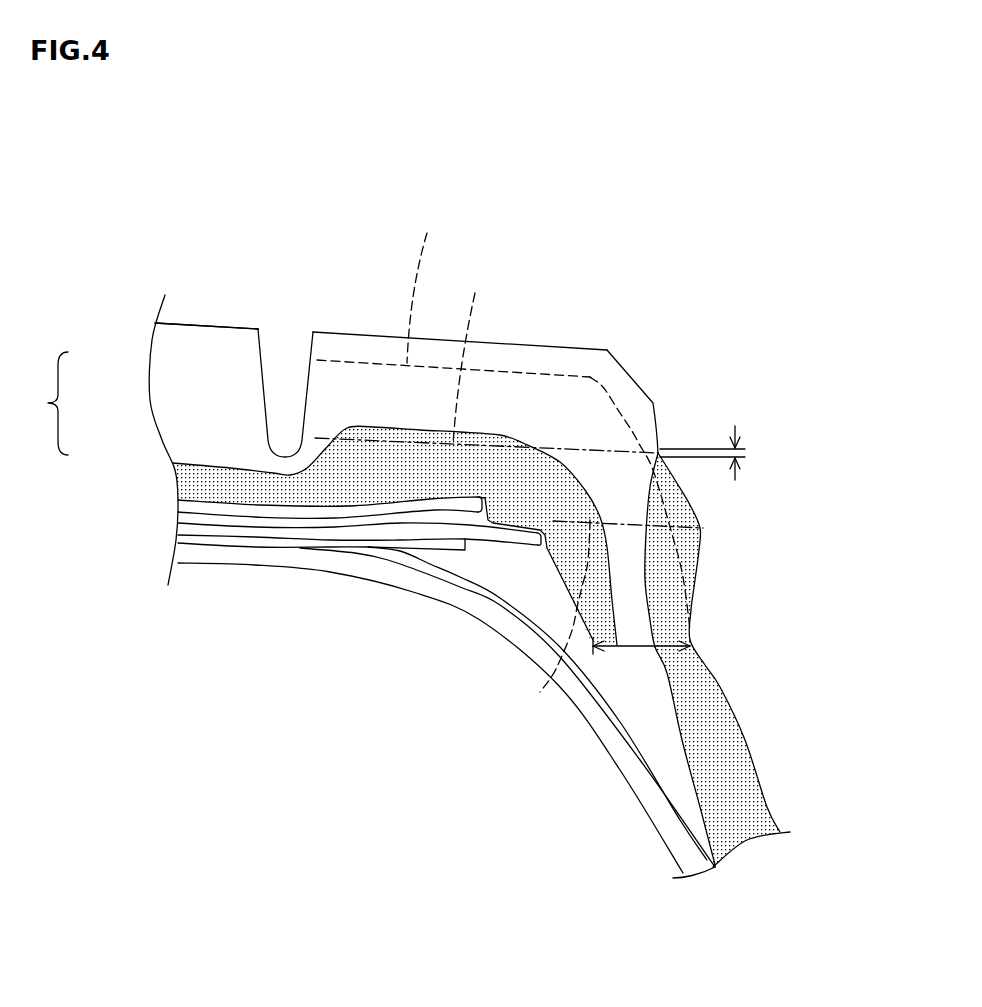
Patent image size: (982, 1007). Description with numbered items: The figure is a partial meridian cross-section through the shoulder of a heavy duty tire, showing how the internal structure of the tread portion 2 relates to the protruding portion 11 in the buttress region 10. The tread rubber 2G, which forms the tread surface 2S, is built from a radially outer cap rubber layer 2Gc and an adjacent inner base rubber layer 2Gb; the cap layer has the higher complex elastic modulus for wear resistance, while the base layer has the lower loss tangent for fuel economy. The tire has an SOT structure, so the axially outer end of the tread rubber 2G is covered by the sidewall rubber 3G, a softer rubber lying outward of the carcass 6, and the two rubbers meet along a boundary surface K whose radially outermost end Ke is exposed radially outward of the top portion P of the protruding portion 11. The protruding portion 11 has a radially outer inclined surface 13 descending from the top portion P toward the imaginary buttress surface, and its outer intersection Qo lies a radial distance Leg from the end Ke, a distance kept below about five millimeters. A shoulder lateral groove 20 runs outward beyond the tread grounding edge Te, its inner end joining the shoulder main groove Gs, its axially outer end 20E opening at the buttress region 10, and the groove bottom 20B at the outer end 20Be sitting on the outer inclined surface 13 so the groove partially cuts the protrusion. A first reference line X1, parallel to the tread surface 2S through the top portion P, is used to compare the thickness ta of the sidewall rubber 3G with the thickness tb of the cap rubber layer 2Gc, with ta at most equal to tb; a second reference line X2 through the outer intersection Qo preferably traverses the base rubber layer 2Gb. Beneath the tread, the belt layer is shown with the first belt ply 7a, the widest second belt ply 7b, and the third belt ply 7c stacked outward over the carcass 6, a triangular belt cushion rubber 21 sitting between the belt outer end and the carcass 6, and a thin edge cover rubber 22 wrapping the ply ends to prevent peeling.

The tread portion 2 is at (227, 293).
The tread surface 2S is at (538, 333).
The tread rubber 2G is at (36, 403).
The cap rubber layer 2Gc is at (207, 380).
The base rubber layer 2Gb is at (177, 480).
The shoulder main groove Gs is at (292, 313).
The tread grounding edge Te is at (607, 348).
The shoulder lateral groove 20 is at (453, 289).
The groove bottom 20B is at (640, 503).
The axially outer end of shoulder lateral groove 20E is at (705, 432).
The outer end of shoulder lateral groove 20Be is at (693, 502).
The second reference line X2 is at (478, 351).
The first reference line X1 is at (540, 692).
The outermost end of boundary surface Ke is at (658, 450).
The outer intersection Qo is at (660, 452).
The distance between outermost end Ke and outer intersection Qo Leg is at (747, 453).
The buttress region 10 is at (742, 388).
The radially outer inclined surface 13 is at (703, 520).
The top portion P is at (703, 528).
The protruding portion 11 is at (692, 545).
The boundary surface K is at (655, 617).
The sidewall rubber 3G is at (723, 747).
The thickness of sidewall rubber ta is at (677, 652).
The thickness of cap rubber layer tb is at (617, 650).
The carcass 6 is at (288, 543).
The first belt ply 7a is at (187, 528).
The second belt ply 7b is at (187, 516).
The third belt ply 7c is at (187, 503).
The belt cushion rubber 21 is at (498, 570).
The edge cover rubber 22 is at (430, 518).